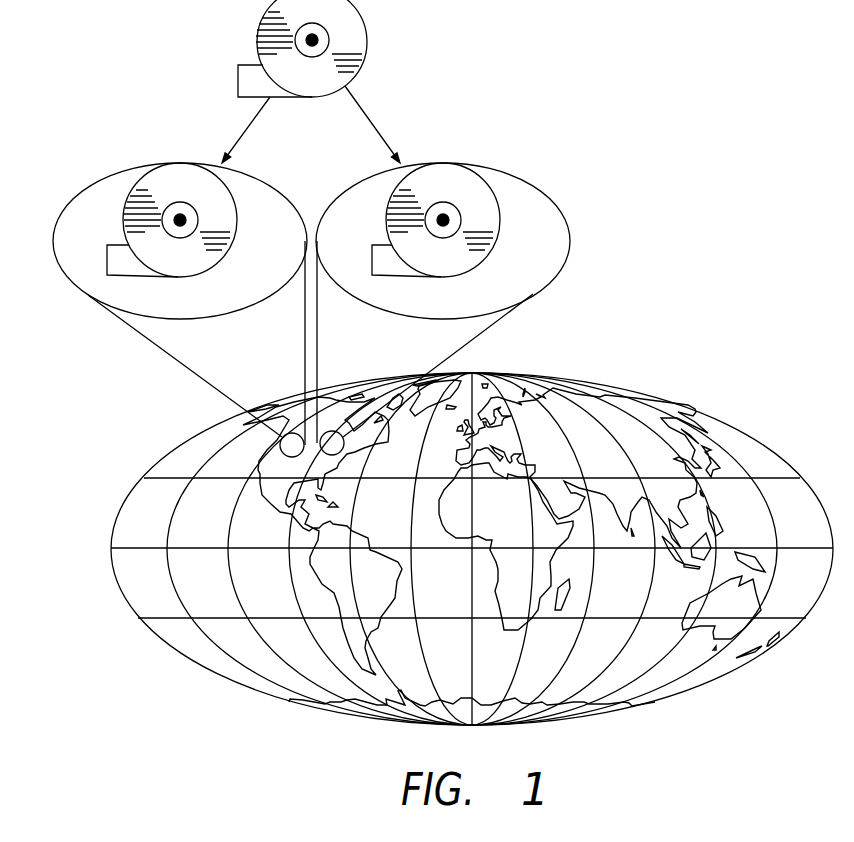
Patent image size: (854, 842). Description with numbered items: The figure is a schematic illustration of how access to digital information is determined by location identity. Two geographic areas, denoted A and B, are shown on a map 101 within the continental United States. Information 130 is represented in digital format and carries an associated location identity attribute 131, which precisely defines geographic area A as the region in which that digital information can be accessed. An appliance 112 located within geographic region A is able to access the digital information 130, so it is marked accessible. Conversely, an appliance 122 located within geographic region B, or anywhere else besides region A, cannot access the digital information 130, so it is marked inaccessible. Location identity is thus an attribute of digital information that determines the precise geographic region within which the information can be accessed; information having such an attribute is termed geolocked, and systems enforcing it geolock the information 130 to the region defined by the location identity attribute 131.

The map 101 is at (116, 521).
The appliance 112 is at (128, 168).
The appliance 122 is at (494, 168).
The information 130 is at (367, 40).
The location identity attribute 131 is at (258, 65).